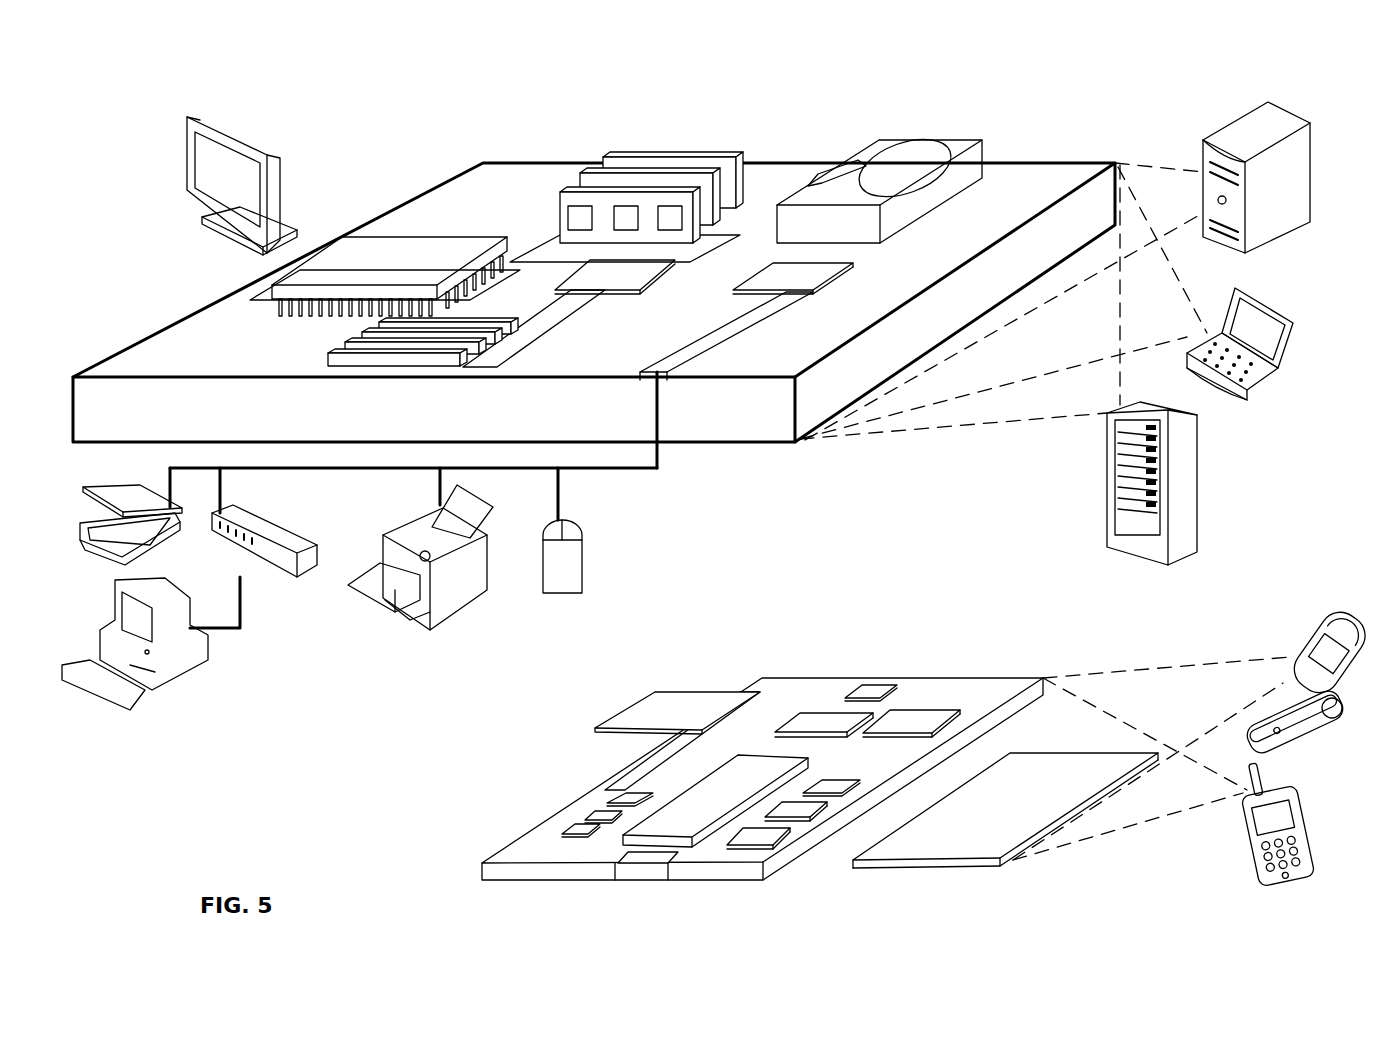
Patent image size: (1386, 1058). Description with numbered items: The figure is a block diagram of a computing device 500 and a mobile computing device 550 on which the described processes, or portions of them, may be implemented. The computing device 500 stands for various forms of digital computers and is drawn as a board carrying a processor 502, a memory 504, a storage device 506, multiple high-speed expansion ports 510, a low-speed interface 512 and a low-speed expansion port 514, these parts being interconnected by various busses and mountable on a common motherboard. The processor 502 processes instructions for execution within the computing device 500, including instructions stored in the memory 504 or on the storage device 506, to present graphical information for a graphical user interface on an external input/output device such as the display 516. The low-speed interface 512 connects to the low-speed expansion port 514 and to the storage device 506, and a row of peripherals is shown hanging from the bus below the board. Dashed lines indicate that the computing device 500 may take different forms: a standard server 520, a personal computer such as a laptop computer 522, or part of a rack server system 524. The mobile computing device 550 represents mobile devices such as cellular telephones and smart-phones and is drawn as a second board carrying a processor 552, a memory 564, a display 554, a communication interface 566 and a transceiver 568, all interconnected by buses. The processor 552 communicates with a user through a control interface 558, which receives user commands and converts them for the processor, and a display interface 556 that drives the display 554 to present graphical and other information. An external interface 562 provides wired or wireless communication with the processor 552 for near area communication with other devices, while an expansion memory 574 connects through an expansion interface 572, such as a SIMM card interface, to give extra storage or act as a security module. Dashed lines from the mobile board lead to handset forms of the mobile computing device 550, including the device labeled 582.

The computing device 500 is at (1312, 84).
The processor 502 is at (272, 299).
The memory 504 is at (635, 155).
The storage device 506 is at (880, 140).
The high-speed expansion ports 510 is at (347, 340).
The low-speed interface 512 is at (780, 268).
The low-speed expansion port 514 is at (665, 380).
The display 516 is at (204, 116).
The standard server 520 is at (1203, 142).
The laptop computer 522 is at (1250, 392).
The rack server system 524 is at (1107, 522).
The mobile computing device 550 is at (455, 760).
The processor 552 is at (690, 820).
The display 554 is at (970, 830).
The display interface 556 is at (750, 835).
The control interface 558 is at (800, 812).
The external interface 562 is at (640, 880).
The memory 564 is at (590, 812).
The communication interface 566 is at (815, 715).
The transceiver 568 is at (918, 718).
The expansion interface 572 is at (745, 690).
The expansion memory 574 is at (640, 698).
The mobile phone 582 is at (1248, 795).